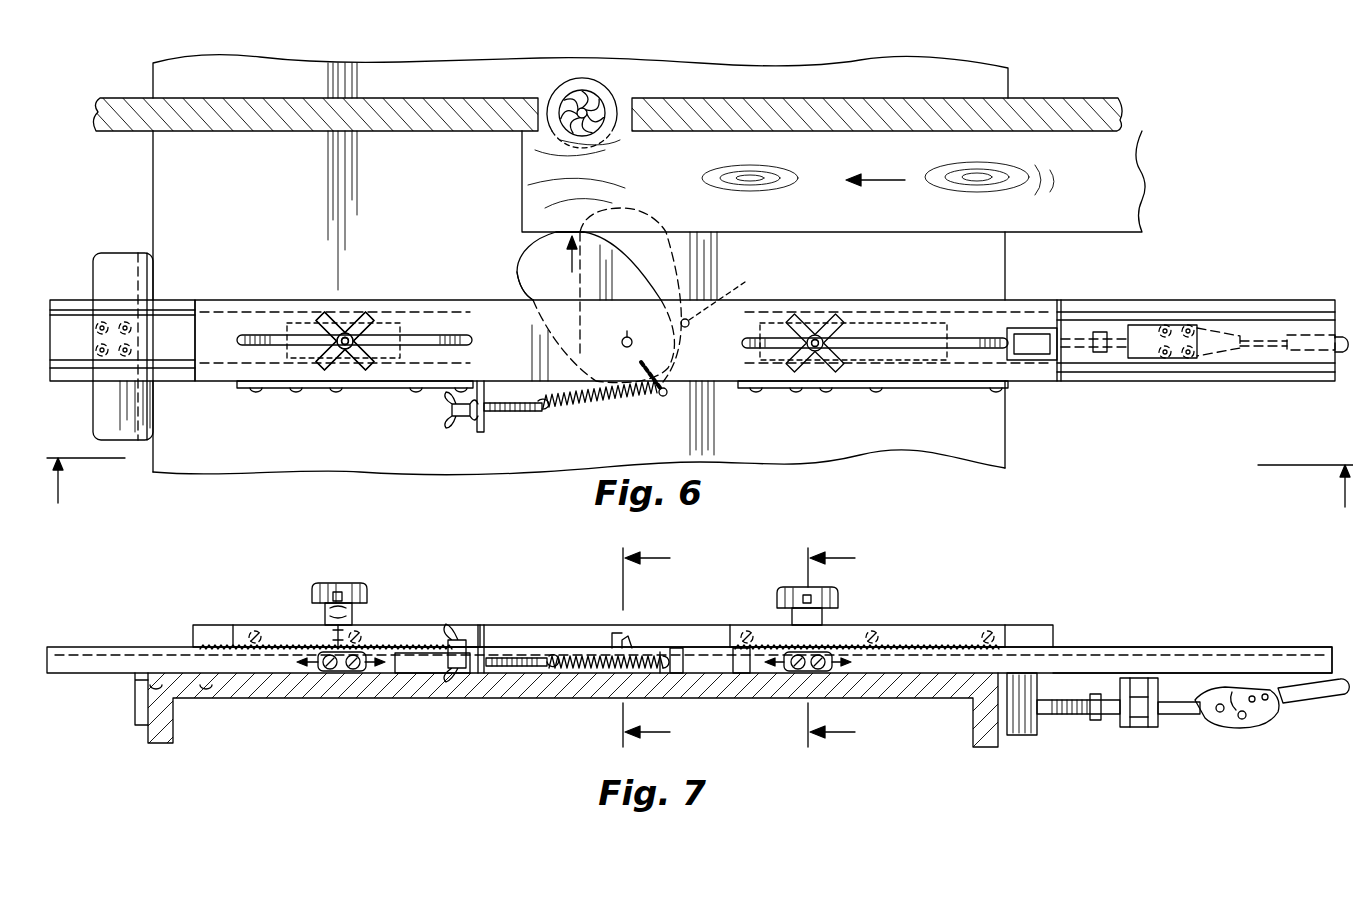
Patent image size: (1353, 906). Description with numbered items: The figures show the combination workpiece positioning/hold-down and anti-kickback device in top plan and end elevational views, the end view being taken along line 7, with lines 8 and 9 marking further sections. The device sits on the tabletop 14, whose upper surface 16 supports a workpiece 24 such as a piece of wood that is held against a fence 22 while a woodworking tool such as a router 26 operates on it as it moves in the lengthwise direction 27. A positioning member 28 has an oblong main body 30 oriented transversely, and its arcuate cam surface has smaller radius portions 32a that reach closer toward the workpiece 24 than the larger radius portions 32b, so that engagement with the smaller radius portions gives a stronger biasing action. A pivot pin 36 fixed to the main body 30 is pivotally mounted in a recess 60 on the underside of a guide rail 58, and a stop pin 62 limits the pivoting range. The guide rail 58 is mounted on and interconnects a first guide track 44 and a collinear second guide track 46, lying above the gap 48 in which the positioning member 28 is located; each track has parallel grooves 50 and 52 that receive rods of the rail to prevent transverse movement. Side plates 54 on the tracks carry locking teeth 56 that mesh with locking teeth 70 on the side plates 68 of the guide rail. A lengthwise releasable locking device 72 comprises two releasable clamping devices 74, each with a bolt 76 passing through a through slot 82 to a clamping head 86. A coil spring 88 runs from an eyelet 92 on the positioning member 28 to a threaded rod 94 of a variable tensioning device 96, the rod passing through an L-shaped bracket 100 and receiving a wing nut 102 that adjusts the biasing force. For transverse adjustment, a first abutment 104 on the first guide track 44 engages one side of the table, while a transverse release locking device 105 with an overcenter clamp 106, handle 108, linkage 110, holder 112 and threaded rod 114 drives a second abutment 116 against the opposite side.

In FIG. 6, the section line 7- 7 is at (699, 500).
In FIG. 7, the section line 8- 8 is at (843, 648).
In FIG. 7, the section line 9- 9 is at (661, 648).
In FIG. 6, the tabletop 14 is at (1006, 448).
In FIG. 6, the upper surface 16 is at (224, 448).
In FIG. 6, the fence 22 is at (843, 112).
In FIG. 6, the workpiece 24 is at (1138, 158).
In FIG. 6, the router 26 is at (590, 100).
In FIG. 6, the lengthwise direction 27 is at (880, 178).
In FIG. 6, the positioning member 28 is at (521, 265).
In FIG. 6, the main body 30 is at (641, 277).
In FIG. 6, the smaller radius portions 32a is at (514, 270).
In FIG. 6, the larger radius portions 32b is at (560, 231).
In FIG. 6, the pivot pin 36 is at (624, 333).
In FIG. 7, the pivot pin 36 is at (633, 636).
In FIG. 6, the first guide track 44 is at (167, 385).
In FIG. 7, the first guide track 44 is at (137, 650).
In FIG. 6, the second guide track 46 is at (1165, 383).
In FIG. 7, the second guide track 46 is at (1135, 650).
In FIG. 7, the gap 48 is at (415, 676).
In FIG. 6, the groove 50 is at (84, 370).
In FIG. 6, the groove 52 is at (80, 312).
In FIG. 7, the side plates 54 is at (325, 670).
In FIG. 7, the locking teeth 56 is at (354, 671).
In FIG. 6, the guide rail 58 is at (722, 377).
In FIG. 7, the guide rail 58 is at (430, 624).
In FIG. 7, the recess 60 is at (613, 632).
In FIG. 6, the stop pin 62 is at (726, 295).
In FIG. 7, the stop pin 62 is at (683, 672).
In FIG. 6, the side plates 68 is at (283, 390).
In FIG. 7, the side plates 68 is at (380, 624).
In FIG. 7, the locking teeth 70 is at (387, 647).
In FIG. 6, the lengthwise releasable locking device 72 is at (301, 294).
In FIG. 7, the lengthwise releasable locking device 72 is at (318, 580).
In FIG. 6, the releasable clamping devices 74 is at (343, 330).
In FIG. 7, the releasable clamping devices 74 is at (356, 585).
In FIG. 7, the bolt 76 is at (330, 632).
In FIG. 6, the through slots 82 is at (268, 335).
In FIG. 6, the clamping head 86 is at (343, 362).
In FIG. 6, the coil spring 88 is at (596, 406).
In FIG. 7, the coil spring 88 is at (573, 670).
In FIG. 6, the eyelet 92 is at (665, 398).
In FIG. 7, the eyelet 92 is at (665, 652).
In FIG. 6, the threaded rod 94 is at (508, 412).
In FIG. 7, the threaded rod 94 is at (505, 668).
In FIG. 6, the variable tensioning device 96 is at (516, 432).
In FIG. 6, the L-shaped bracket 100 is at (481, 434).
In FIG. 7, the L-shaped bracket 100 is at (481, 676).
In FIG. 6, the wing nut 102 is at (462, 420).
In FIG. 7, the wing nut 102 is at (462, 670).
In FIG. 6, the first abutment 104 is at (120, 258).
In FIG. 7, the first abutment 104 is at (134, 706).
In FIG. 7, the transverse release locking device 105 is at (1272, 746).
In FIG. 6, the overcenter clamp 106 is at (1182, 326).
In FIG. 7, the overcenter clamp 106 is at (1268, 718).
In FIG. 6, the handle 108 is at (1340, 336).
In FIG. 7, the handle 108 is at (1327, 700).
In FIG. 7, the linkage 110 is at (1175, 716).
In FIG. 7, the holder 112 is at (1126, 729).
In FIG. 7, the threaded rod 114 is at (1064, 716).
In FIG. 6, the second abutment 116 is at (1028, 365).
In FIG. 7, the second abutment 116 is at (1020, 737).